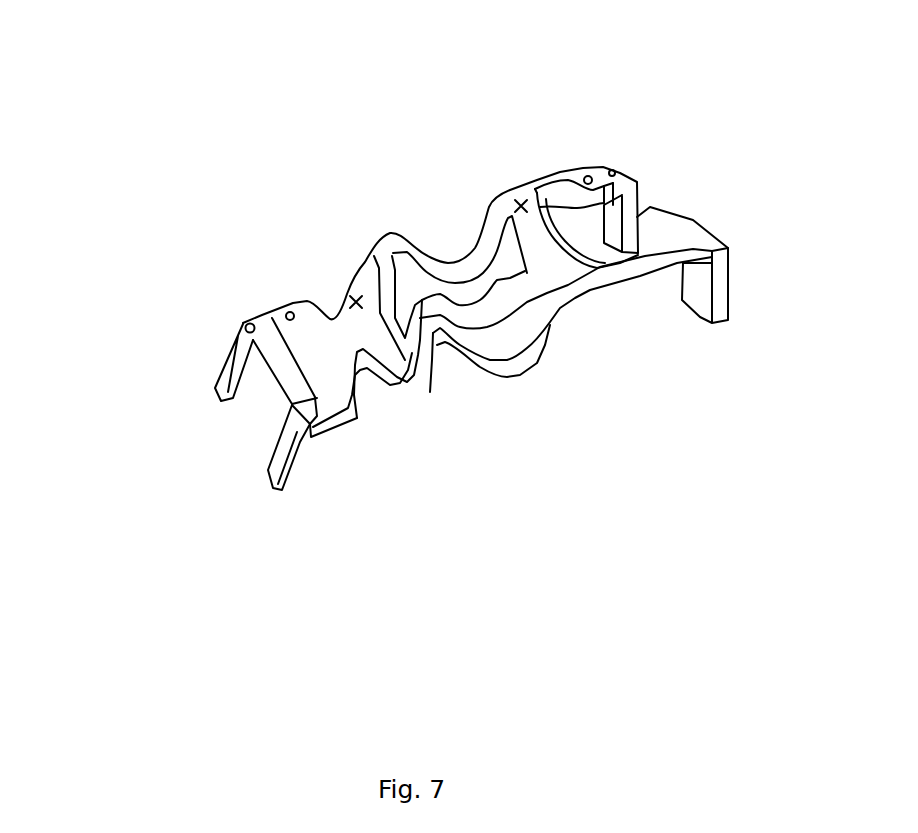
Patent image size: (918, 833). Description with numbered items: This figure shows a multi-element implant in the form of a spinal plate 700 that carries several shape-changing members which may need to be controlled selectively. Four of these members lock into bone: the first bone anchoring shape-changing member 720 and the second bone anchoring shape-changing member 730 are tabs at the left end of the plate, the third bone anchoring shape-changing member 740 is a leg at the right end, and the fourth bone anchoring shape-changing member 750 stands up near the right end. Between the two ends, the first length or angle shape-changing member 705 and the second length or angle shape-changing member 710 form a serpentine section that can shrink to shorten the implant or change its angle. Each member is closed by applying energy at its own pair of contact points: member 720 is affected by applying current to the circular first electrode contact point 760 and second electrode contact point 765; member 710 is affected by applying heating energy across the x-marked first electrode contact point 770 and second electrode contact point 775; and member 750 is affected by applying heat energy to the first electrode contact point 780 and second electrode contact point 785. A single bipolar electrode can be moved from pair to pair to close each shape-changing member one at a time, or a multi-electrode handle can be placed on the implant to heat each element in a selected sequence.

The spinal plate 700 is at (592, 297).
The first length or angle shape-changing member 705 is at (417, 320).
The second length or angle shape-changing member 710 is at (415, 252).
The first bone anchoring shape-changing member 720 is at (215, 400).
The second bone anchoring shape-changing member 730 is at (263, 488).
The third bone anchoring shape-changing member 740 is at (733, 287).
The fourth bone anchoring shape-changing member 750 is at (645, 187).
The first electrode contact point for member 720 760 is at (245, 326).
The second electrode contact point for member 720 765 is at (287, 313).
The first electrode contact point for member 710 770 is at (349, 297).
The second electrode contact point for member 710 775 is at (520, 203).
The first electrode contact point for member 750 780 is at (588, 176).
The second electrode contact point for member 750 785 is at (613, 170).